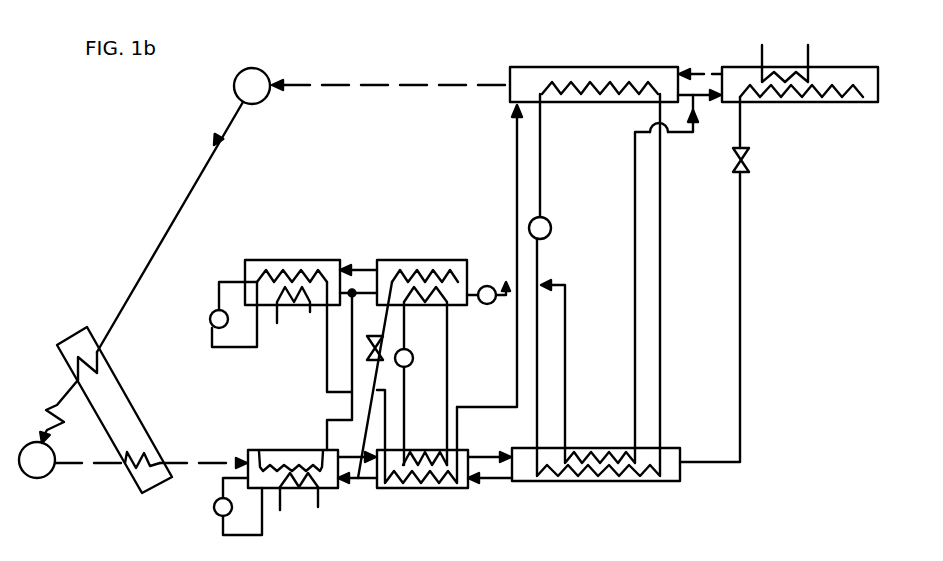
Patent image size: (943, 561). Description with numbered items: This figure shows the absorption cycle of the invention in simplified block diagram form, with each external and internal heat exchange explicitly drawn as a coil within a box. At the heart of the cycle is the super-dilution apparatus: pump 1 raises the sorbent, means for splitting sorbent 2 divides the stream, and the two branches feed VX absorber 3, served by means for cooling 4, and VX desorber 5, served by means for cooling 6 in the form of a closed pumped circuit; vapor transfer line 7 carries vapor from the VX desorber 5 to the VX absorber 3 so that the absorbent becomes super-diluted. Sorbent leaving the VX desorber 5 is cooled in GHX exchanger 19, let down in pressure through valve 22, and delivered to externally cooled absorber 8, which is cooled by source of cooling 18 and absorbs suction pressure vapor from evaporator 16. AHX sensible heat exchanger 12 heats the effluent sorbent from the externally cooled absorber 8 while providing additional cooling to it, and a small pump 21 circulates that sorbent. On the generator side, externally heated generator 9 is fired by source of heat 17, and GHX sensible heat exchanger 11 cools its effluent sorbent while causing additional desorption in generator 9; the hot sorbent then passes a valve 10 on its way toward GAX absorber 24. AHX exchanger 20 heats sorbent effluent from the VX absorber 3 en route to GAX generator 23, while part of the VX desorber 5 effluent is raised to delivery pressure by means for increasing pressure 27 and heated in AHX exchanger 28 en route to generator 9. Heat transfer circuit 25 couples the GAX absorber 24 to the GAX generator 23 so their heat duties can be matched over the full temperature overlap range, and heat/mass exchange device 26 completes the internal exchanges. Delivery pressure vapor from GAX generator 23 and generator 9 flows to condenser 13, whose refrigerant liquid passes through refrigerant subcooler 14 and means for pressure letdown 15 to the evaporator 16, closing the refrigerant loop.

The pump 1 is at (214, 500).
The means for splitting sorbent 2 is at (355, 296).
The VX absorber 3 is at (293, 260).
The means for cooling 4 is at (309, 313).
The VX desorber 5 is at (450, 260).
The means for cooling 6 is at (412, 351).
The vapor transfer line 7 is at (365, 270).
The externally cooled absorber 8 is at (302, 450).
The externally heated generator 9 is at (767, 103).
The expansion valve 10 is at (750, 166).
The GHX sensible heat exchanger 11 is at (828, 103).
The AHX sensible heat exchanger 12 is at (265, 450).
The condenser 13 is at (263, 68).
The refrigerant subcooler 14 is at (118, 378).
The means for pressure letdown 15 is at (56, 400).
The evaporator 16 is at (51, 478).
The source of heat 17 is at (809, 56).
The source of cooling 18 is at (319, 507).
The GHX exchanger 19 is at (421, 262).
The AHX exchanger 20 is at (267, 268).
The pump 21 is at (210, 314).
The valve 22 is at (383, 356).
The GAX generator 23 is at (558, 67).
The GAX absorber 24 is at (557, 483).
The heat transfer circuit 25 is at (552, 222).
The heat/mass exchange device 26 is at (429, 489).
The means for increasing pressure 27 is at (490, 305).
The AHX exchanger 28 is at (582, 450).